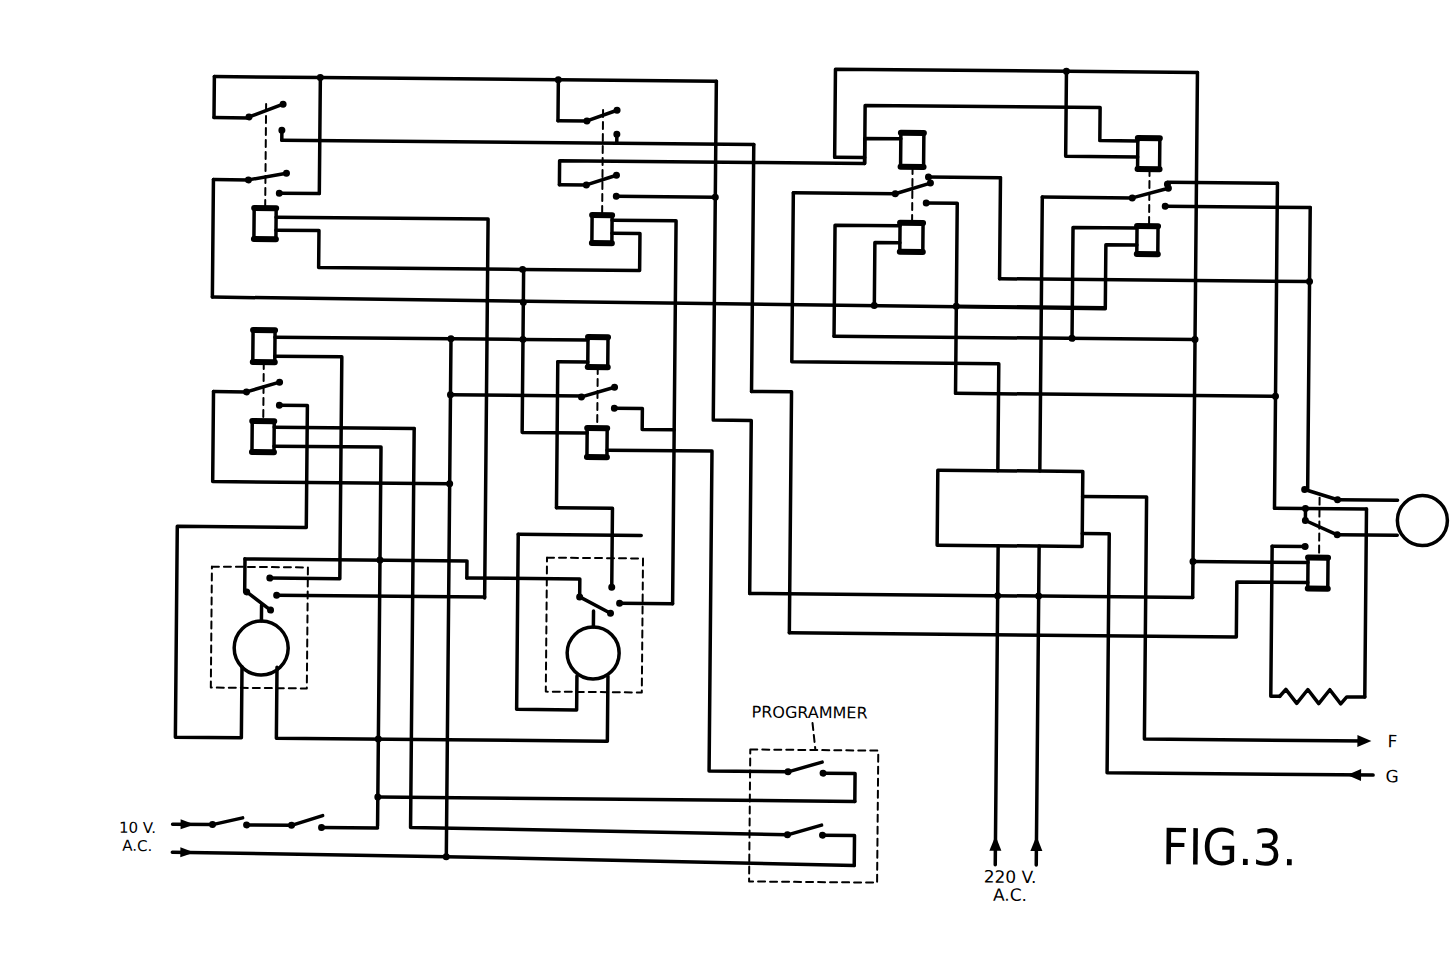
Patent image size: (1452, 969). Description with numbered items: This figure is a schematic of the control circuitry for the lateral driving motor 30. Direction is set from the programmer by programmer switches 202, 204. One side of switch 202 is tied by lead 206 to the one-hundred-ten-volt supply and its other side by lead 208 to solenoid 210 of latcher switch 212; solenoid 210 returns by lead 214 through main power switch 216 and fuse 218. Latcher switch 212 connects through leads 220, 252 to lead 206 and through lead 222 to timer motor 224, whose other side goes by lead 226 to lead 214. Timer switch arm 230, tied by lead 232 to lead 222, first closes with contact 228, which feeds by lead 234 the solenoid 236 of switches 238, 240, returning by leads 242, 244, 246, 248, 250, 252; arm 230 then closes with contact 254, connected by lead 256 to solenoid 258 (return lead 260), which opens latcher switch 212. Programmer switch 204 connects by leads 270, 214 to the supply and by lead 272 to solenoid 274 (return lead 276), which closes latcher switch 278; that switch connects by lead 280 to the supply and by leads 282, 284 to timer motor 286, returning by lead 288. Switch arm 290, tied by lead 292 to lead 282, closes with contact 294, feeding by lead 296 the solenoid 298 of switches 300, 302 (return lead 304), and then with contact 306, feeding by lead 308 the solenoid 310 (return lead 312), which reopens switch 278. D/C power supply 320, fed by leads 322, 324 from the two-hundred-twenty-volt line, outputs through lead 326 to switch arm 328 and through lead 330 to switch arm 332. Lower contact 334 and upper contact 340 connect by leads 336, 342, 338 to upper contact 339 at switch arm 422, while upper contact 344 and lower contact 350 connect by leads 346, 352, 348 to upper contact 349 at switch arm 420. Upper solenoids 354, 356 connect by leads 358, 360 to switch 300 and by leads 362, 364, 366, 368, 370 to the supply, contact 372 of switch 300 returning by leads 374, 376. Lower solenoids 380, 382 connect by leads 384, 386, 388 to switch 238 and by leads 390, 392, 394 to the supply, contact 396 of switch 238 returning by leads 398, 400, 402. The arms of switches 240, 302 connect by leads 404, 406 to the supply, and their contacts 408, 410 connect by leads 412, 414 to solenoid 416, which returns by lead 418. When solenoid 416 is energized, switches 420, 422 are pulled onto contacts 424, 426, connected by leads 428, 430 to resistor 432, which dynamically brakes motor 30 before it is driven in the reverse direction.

The lateral driving motor 30 is at (1424, 489).
The programmer switch 202 is at (808, 836).
The programmer switch 204 is at (808, 774).
The lead 206 is at (598, 861).
The lead 208 is at (637, 831).
The solenoid 210 is at (261, 457).
The latcher switch 212 is at (257, 394).
The lead 214 is at (361, 449).
The main power switch 216 is at (308, 826).
The fuse 218 is at (226, 826).
The lead 220 is at (287, 487).
The lead 222 is at (210, 530).
The timer motor 224 is at (290, 651).
The lead 226 is at (283, 716).
The timer switch contact 228 is at (279, 599).
The timer switch arm 230 is at (243, 607).
The lead 232 is at (249, 561).
The lead 234 is at (495, 498).
The solenoid 236 is at (266, 246).
The switch 238 is at (259, 181).
The switch 240 is at (268, 117).
The lead 242 is at (409, 270).
The lead 244 is at (530, 321).
The lead 246 is at (462, 340).
The lead 248 is at (448, 371).
The lead 250 is at (448, 412).
The lead 252 is at (455, 632).
The timer switch contact 254 is at (277, 576).
The lead 256 is at (355, 587).
The solenoid 258 is at (250, 349).
The lead 260 is at (388, 340).
The lead 270 is at (553, 799).
The lead 272 is at (718, 668).
The solenoid 274 is at (600, 459).
The lead 276 is at (551, 442).
The latcher switch 278 is at (618, 394).
The lead 280 is at (504, 398).
The lead 282 is at (680, 431).
The lead 284 is at (517, 667).
The timer motor 286 is at (621, 654).
The lead 288 is at (615, 724).
The switch arm 290 is at (581, 611).
The lead 292 is at (503, 578).
The contact 294 is at (623, 605).
The lead 296 is at (674, 592).
The solenoid 298 is at (589, 232).
The switch 300 is at (621, 183).
The switch 302 is at (598, 122).
The lead 304 is at (598, 272).
The contact 306 is at (613, 588).
The lead 308 is at (610, 508).
The solenoid 310 is at (610, 351).
The lead 312 is at (578, 340).
The D/C power supply 320 is at (937, 498).
The lead 322 is at (996, 806).
The lead 324 is at (1045, 806).
The lead 326 is at (900, 362).
The switch arm 328 is at (896, 188).
The lead 330 is at (1047, 433).
The switch arm 332 is at (1141, 188).
The lower contact 334 is at (925, 201).
The lead 336 is at (960, 290).
The lead 338 is at (1272, 457).
The upper contact 339 is at (1366, 504).
The upper contact 340 is at (1198, 174).
The lead 342 is at (1272, 258).
The upper contact 344 is at (928, 168).
The lead 346 is at (1003, 178).
The lead 348 is at (1315, 345).
The upper contact 349 is at (1308, 483).
The lower contact 350 is at (1163, 203).
The lead 352 is at (1299, 201).
The upper solenoid 354 is at (921, 145).
The upper solenoid 356 is at (1150, 133).
The lead 358 is at (994, 104).
The lead 360 is at (796, 162).
The lead 362 is at (960, 68).
The lead 364 is at (1062, 131).
The lead 366 is at (1198, 103).
The lead 368 is at (1198, 420).
The lead 370 is at (1181, 595).
The contact 372 is at (617, 201).
The lead 374 is at (727, 170).
The lead 376 is at (882, 630).
The lower solenoid 380 is at (912, 251).
The lower solenoid 382 is at (1146, 251).
The lead 384 is at (876, 240).
The lead 386 is at (1108, 293).
The lead 388 is at (811, 309).
The lead 390 is at (873, 334).
The lead 392 is at (1078, 322).
The lead 394 is at (1134, 337).
The contact 396 is at (279, 206).
The lead 398 is at (320, 108).
The lead 400 is at (425, 80).
The lead 402 is at (722, 108).
The lead 404 is at (258, 80).
The lead 406 is at (552, 111).
The contact 408 is at (298, 124).
The contact 410 is at (616, 134).
The lead 412 is at (444, 143).
The lead 414 is at (797, 461).
The solenoid 416 is at (1320, 585).
The lead 418 is at (1217, 559).
The switch 420 is at (1329, 491).
The switch 422 is at (1338, 531).
The contact 424 is at (1272, 503).
The contact 426 is at (1303, 539).
The lead 428 is at (1372, 628).
The lead 430 is at (1265, 662).
The resistor 432 is at (1321, 684).